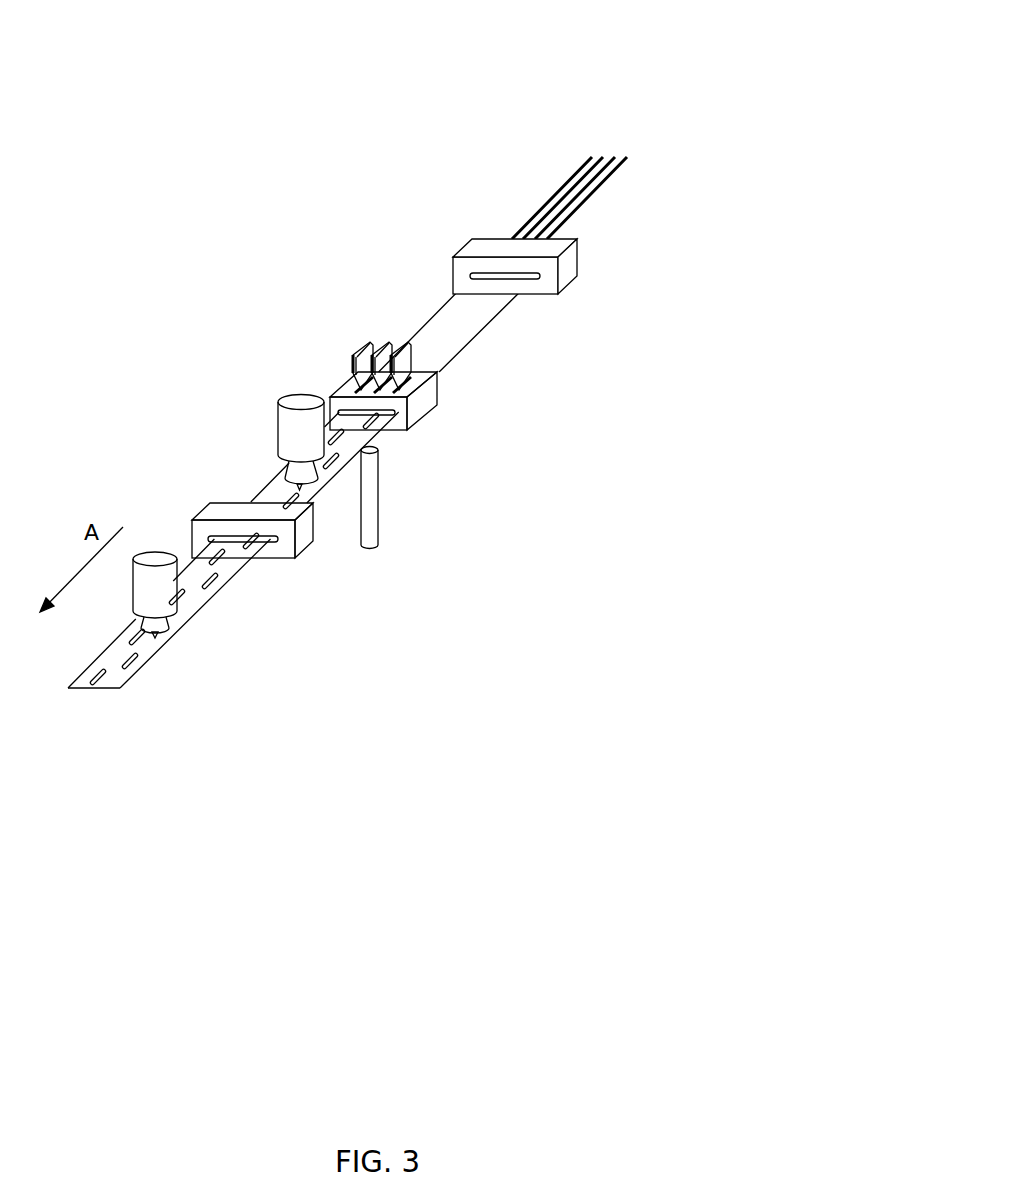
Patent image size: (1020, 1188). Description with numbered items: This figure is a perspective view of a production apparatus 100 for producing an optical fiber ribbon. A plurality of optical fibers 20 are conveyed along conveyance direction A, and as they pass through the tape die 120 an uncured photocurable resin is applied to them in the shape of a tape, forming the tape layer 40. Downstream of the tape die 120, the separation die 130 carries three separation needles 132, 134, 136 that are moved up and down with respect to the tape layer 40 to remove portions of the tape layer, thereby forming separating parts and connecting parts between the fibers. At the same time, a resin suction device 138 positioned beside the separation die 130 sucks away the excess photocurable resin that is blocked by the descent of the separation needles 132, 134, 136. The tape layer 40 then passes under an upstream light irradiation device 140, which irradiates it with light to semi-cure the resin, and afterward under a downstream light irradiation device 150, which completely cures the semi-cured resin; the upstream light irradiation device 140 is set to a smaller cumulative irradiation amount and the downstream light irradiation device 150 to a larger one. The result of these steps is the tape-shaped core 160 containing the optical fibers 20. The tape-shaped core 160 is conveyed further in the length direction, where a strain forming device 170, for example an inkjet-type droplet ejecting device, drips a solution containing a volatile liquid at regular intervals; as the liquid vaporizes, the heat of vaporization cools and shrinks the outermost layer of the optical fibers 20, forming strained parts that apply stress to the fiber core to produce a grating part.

The production apparatus 100 is at (609, 55).
The optical fibers 20 is at (613, 170).
The tape layer 40 is at (482, 329).
The tape die 120 is at (577, 258).
The separation die 130 is at (437, 378).
The separation needle 132 is at (363, 343).
The separation needle 134 is at (383, 343).
The separation needle 136 is at (403, 347).
The resin suction device 138 is at (378, 492).
The light irradiation device 140 is at (277, 403).
The light irradiation device 150 is at (208, 503).
The tape-shaped core 160 is at (312, 492).
The strain forming device 170 is at (177, 600).